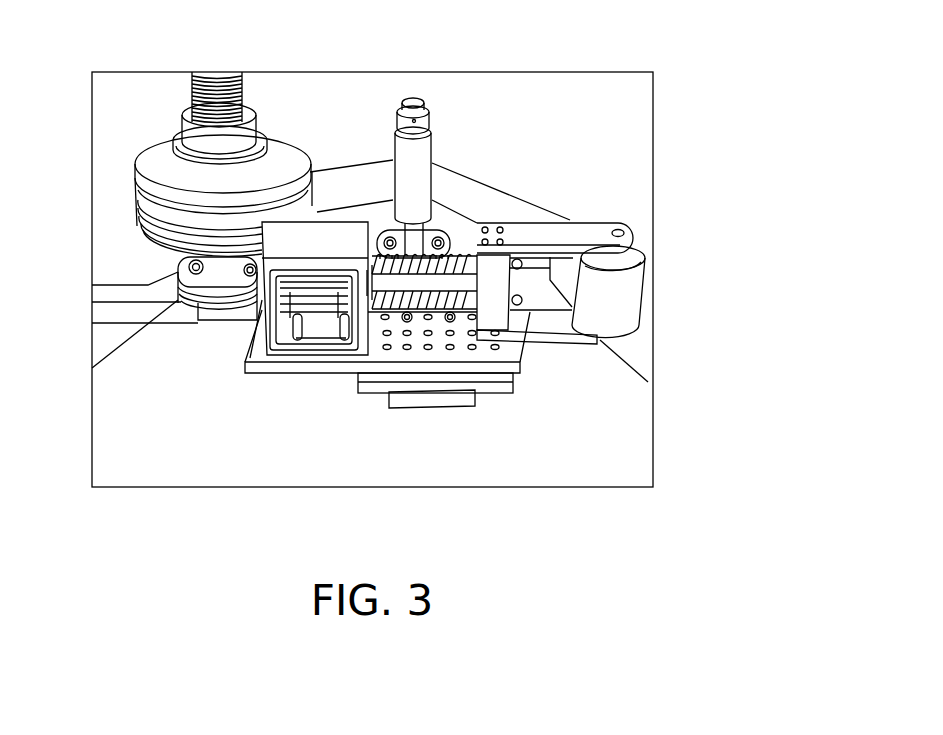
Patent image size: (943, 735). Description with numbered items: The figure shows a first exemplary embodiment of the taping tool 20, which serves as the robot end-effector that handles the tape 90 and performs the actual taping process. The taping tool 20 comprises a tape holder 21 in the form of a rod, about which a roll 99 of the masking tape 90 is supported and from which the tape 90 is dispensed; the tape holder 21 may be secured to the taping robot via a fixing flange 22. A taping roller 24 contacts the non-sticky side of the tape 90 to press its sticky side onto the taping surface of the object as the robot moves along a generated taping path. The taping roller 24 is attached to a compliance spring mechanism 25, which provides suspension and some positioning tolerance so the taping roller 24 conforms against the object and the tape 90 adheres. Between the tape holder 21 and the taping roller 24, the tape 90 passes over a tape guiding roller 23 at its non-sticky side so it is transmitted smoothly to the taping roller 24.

The taping tool 20 is at (608, 63).
The tape holder 21 is at (163, 168).
The fixing flange 22 is at (220, 278).
The tape guiding roller 23 is at (422, 152).
The taping roller 24 is at (632, 248).
The compliance spring mechanism 25 is at (430, 322).
The tape 90 is at (358, 180).
The roll 99 is at (158, 210).